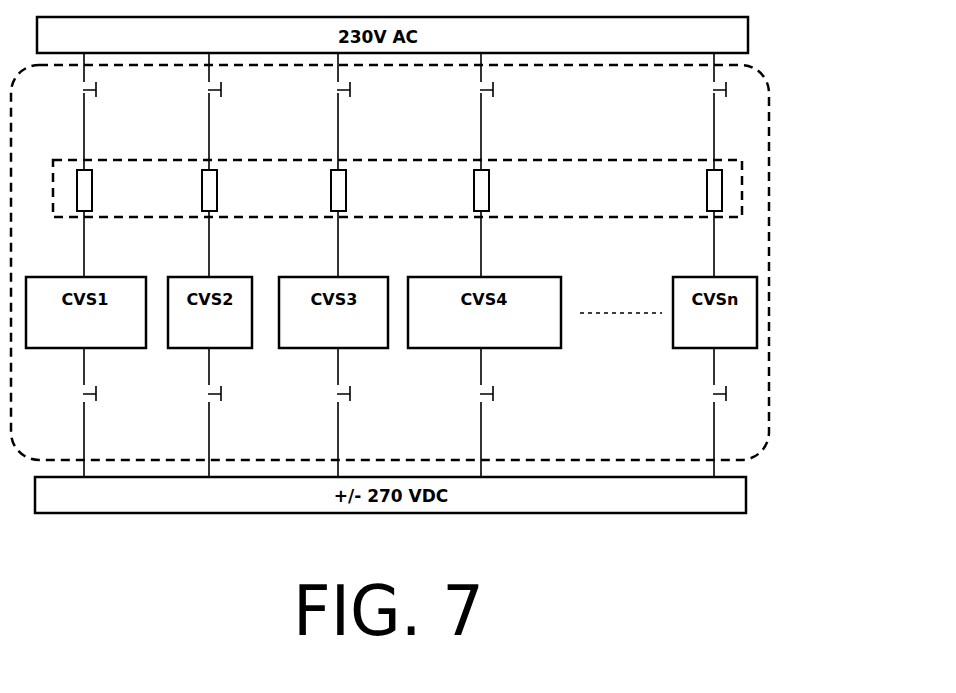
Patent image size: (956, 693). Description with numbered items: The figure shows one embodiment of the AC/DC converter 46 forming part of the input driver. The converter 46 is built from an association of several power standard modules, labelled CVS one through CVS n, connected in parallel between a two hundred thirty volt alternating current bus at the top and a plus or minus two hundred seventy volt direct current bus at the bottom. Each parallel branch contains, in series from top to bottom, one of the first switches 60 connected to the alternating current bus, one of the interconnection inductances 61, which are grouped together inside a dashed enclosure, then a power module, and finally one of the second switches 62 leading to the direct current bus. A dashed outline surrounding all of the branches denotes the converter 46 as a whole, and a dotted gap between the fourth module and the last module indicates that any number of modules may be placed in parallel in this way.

The AC/DC converter 46 is at (769, 260).
The first switches 60 is at (207, 92).
The interconnection inductances 61 is at (742, 172).
The second switches 62 is at (207, 400).